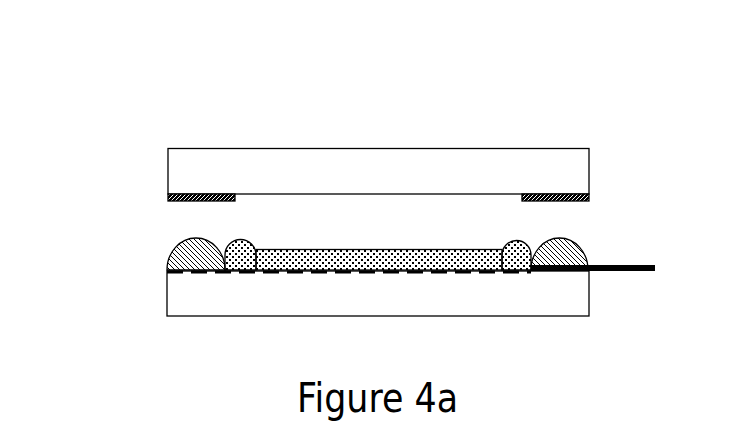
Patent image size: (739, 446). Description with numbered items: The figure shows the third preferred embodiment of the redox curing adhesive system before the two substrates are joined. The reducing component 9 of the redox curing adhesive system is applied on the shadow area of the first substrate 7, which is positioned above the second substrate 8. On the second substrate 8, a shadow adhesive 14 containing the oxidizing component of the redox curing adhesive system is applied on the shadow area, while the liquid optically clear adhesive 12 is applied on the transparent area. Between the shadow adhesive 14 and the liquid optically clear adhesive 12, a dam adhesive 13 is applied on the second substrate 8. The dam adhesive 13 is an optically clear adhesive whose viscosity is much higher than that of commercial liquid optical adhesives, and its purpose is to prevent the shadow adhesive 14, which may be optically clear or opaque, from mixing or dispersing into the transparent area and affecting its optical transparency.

The first substrate 7 is at (190, 172).
The second substrate 8 is at (190, 302).
The reducing component 9 is at (168, 198).
The liquid optically clear adhesive 12 is at (457, 259).
The dam adhesive 13 is at (510, 261).
The shadow adhesive 14 is at (178, 260).